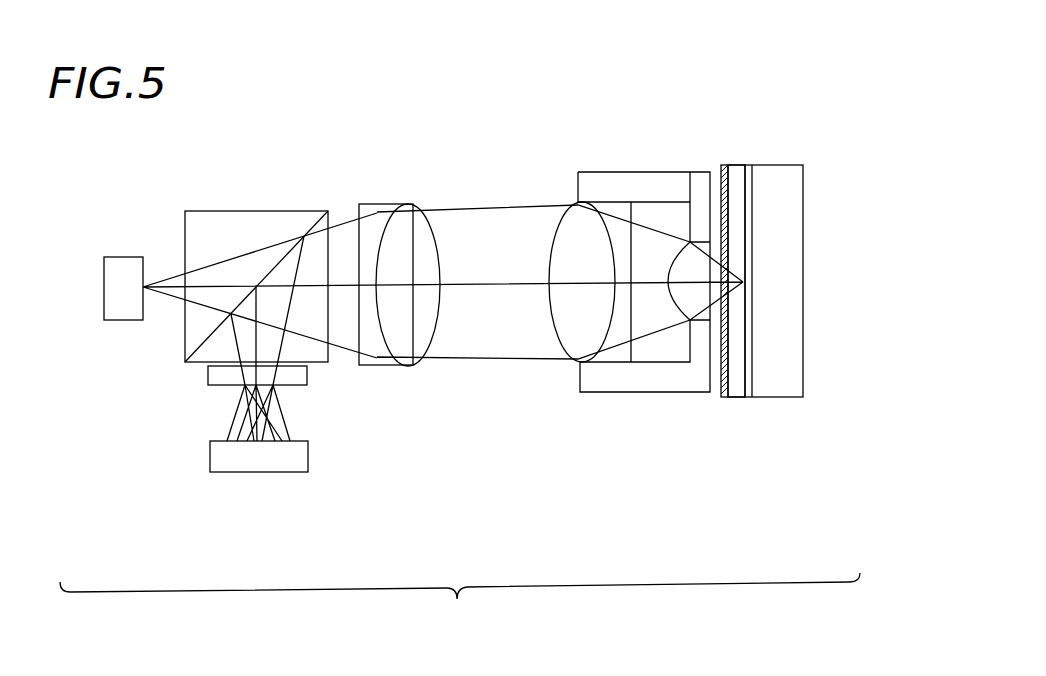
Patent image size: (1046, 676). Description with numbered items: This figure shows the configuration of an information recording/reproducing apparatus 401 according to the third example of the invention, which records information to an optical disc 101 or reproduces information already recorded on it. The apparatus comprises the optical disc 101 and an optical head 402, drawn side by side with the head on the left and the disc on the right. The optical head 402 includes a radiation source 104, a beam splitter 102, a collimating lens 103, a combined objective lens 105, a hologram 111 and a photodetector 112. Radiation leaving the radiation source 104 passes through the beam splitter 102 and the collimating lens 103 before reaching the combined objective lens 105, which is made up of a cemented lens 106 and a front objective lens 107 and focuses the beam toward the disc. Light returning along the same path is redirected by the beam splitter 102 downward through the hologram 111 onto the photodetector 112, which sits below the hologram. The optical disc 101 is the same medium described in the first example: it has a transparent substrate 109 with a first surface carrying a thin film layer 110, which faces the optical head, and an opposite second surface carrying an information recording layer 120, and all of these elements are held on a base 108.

The optical disc 101 is at (806, 265).
The beam splitter 102 is at (237, 227).
The collimating lens 103 is at (413, 228).
The radiation source 104 is at (122, 265).
The combined objective lens 105 is at (615, 368).
The cemented lens 106 is at (620, 352).
The front objective lens 107 is at (696, 303).
The base 108 is at (787, 355).
The transparent substrate 109 is at (738, 342).
The thin film layer 110 is at (723, 170).
The hologram 111 is at (215, 377).
The photodetector 112 is at (225, 463).
The information recording layer 120 is at (750, 183).
The information recording/reproducing apparatus 401 is at (583, 48).
The optical head 402 is at (460, 604).